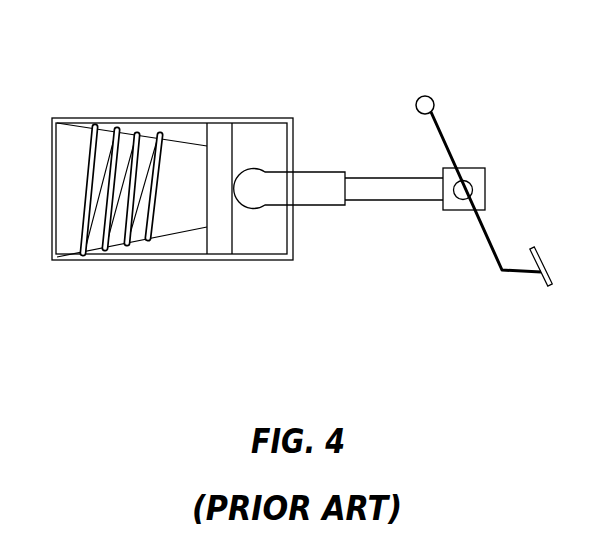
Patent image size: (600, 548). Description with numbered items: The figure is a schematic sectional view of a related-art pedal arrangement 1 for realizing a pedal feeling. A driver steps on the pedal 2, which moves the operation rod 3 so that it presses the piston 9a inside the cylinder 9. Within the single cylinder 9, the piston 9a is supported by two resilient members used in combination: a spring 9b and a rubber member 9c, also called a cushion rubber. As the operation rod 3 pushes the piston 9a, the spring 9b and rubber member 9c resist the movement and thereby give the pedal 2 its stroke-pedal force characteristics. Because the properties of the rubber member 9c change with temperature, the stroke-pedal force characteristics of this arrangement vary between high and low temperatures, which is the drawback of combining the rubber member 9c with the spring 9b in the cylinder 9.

The pedal assembly 1 is at (484, 147).
The pedal 2 is at (448, 150).
The operation rod 3 is at (390, 195).
The cylinder 9 is at (163, 257).
The piston 9a is at (220, 133).
The spring 9b is at (138, 137).
The rubber member 9c is at (180, 153).